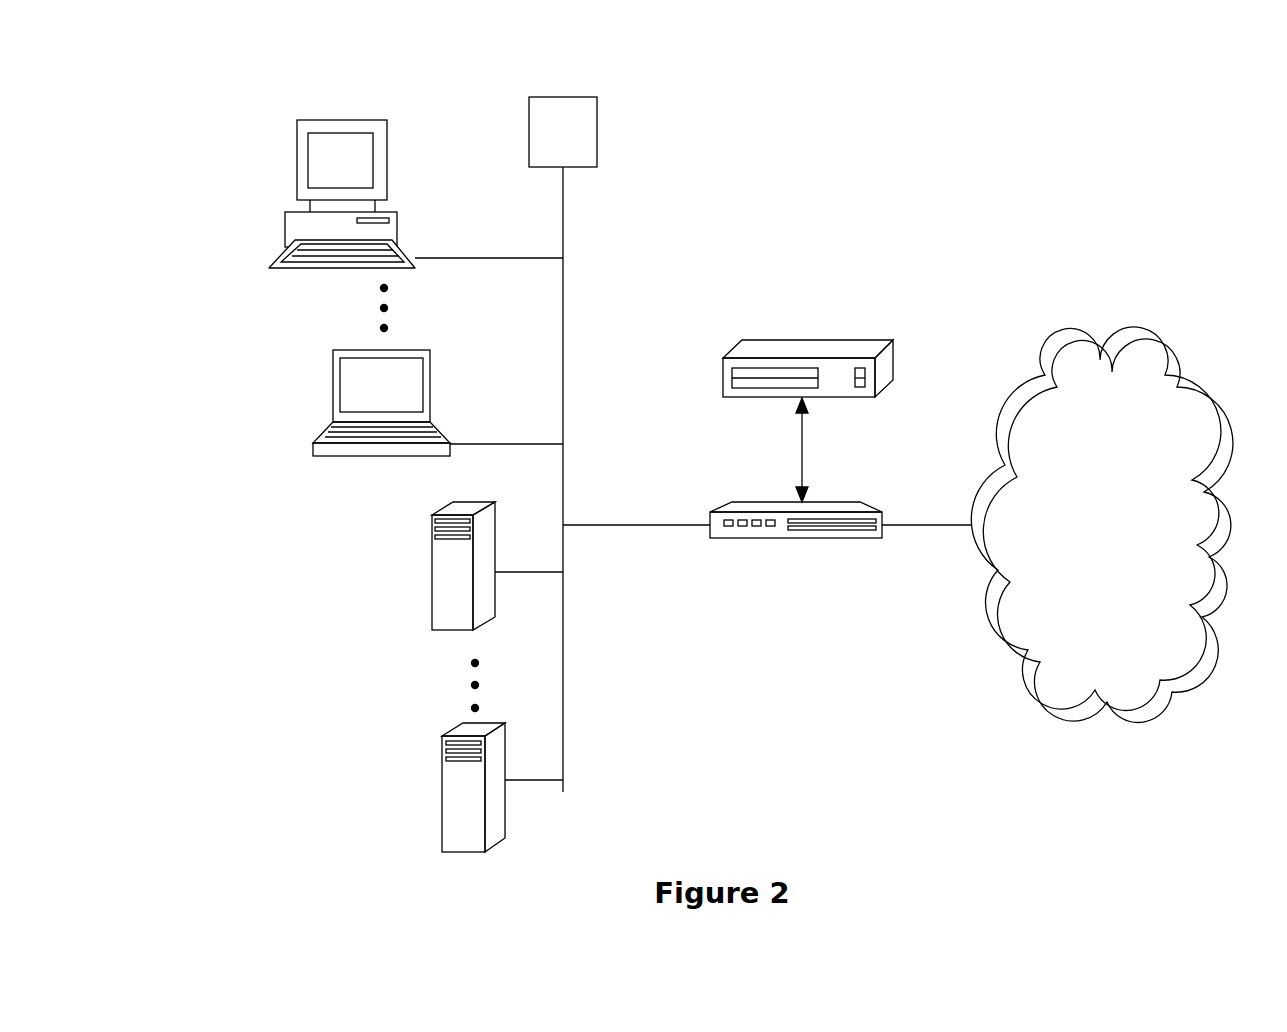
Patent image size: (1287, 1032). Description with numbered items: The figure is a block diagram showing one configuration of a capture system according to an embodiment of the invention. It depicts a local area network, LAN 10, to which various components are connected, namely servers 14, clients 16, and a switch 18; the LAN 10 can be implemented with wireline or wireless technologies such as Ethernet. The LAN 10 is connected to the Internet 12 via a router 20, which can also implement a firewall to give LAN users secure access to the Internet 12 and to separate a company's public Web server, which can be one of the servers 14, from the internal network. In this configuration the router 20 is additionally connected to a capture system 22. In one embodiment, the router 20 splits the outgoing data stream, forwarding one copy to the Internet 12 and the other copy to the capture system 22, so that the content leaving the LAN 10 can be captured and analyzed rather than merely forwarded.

The local area network 10 is at (570, 479).
The Internet 12 is at (1102, 524).
The servers 14 is at (415, 596).
The clients 16 is at (267, 235).
The switch 18 is at (573, 85).
The router 20 is at (796, 550).
The capture system 22 is at (813, 328).